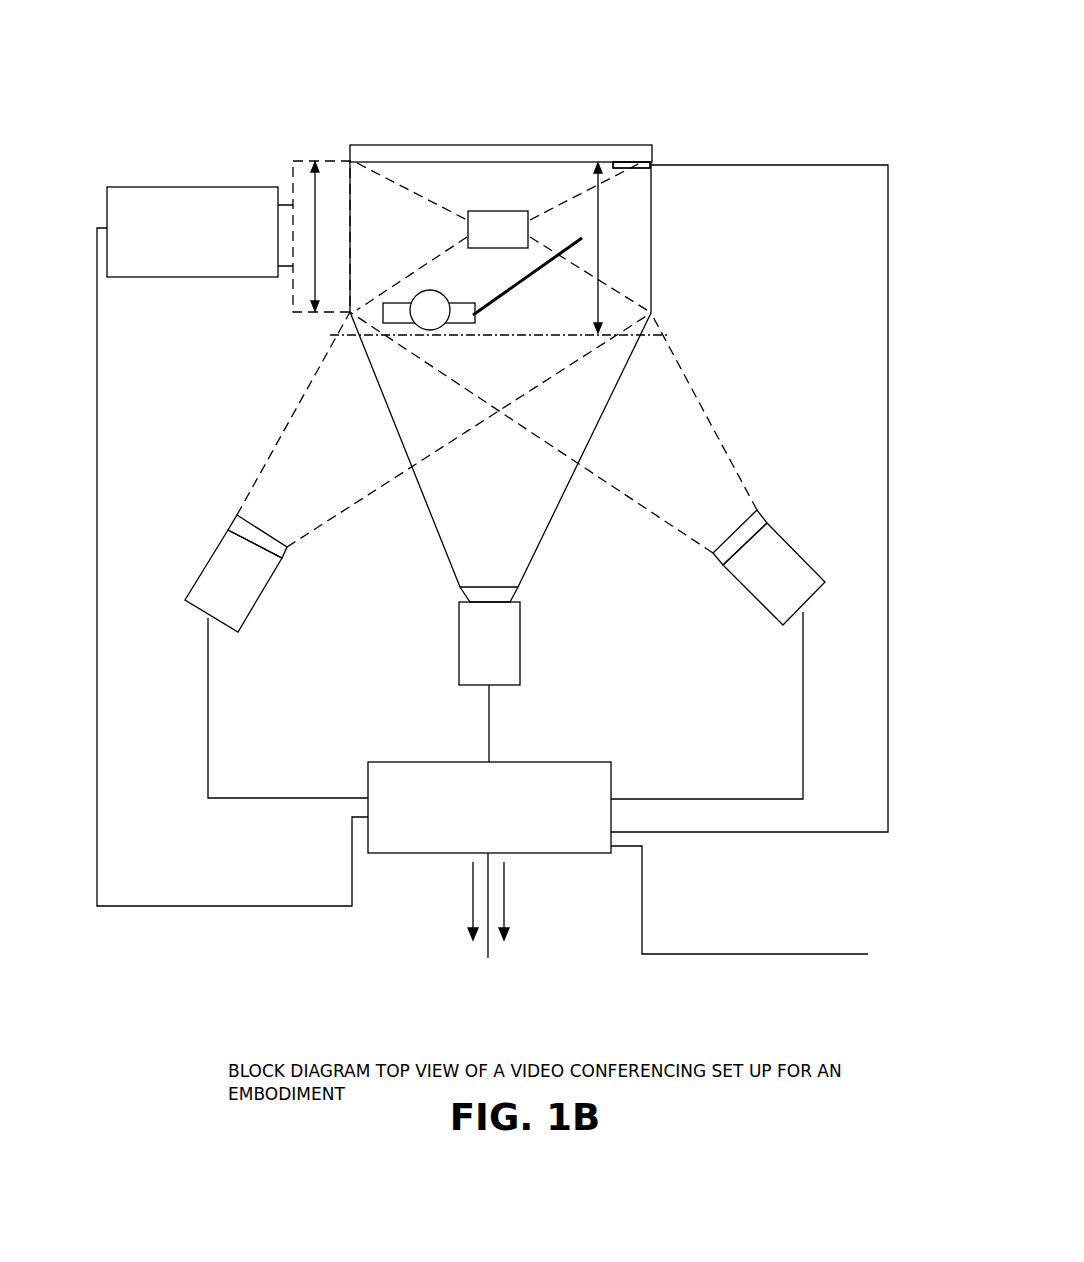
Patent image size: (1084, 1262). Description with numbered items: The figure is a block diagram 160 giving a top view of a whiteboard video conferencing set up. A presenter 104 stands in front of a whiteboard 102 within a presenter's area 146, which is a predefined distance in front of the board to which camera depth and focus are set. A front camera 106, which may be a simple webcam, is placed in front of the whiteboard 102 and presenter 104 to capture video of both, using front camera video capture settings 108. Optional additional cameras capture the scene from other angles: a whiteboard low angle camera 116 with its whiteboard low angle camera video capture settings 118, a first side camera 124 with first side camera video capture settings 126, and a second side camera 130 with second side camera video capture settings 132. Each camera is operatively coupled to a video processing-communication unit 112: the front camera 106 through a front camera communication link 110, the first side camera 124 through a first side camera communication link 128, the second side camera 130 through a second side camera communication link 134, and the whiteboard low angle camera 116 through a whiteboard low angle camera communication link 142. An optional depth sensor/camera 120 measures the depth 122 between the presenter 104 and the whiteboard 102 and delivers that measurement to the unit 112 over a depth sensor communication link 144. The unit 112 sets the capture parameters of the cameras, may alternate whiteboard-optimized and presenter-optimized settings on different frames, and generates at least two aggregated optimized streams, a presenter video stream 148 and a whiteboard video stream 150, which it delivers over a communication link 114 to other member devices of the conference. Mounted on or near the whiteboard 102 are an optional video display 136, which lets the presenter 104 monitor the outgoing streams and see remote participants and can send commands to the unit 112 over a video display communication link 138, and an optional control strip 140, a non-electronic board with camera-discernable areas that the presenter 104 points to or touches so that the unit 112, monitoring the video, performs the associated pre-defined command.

The whiteboard 102 is at (507, 145).
The presenter 104 is at (423, 313).
The front camera 106 is at (520, 640).
The front camera video capture settings 108 is at (429, 517).
The front camera communication link 110 is at (483, 705).
The video processing-communication unit 112 is at (489, 807).
The communication link to other member devices 114 is at (487, 951).
The whiteboard low angle camera 116 is at (507, 211).
The whiteboard low angle camera video capture settings 118 is at (397, 277).
The depth sensor/camera 120 is at (200, 232).
The depth between presenter and board 122 is at (313, 176).
The side camera 1 124 is at (193, 608).
The side camera 1 video capture settings 126 is at (283, 428).
The side camera 1 communication link 128 is at (255, 802).
The side camera 2 130 is at (800, 548).
The side camera 2 video capture settings 132 is at (718, 434).
The side camera 2 communication link 134 is at (698, 797).
The video display 136 is at (651, 168).
The video display communication link 138 is at (778, 835).
The control strip 140 is at (468, 229).
The whiteboard low angle camera communication link 142 is at (788, 957).
The depth sensor communication link 144 is at (270, 908).
The presenter's area 146 is at (600, 263).
The presenter video stream 148 is at (468, 871).
The whiteboard video stream 150 is at (508, 871).
The block diagram top view 160 is at (132, 1013).